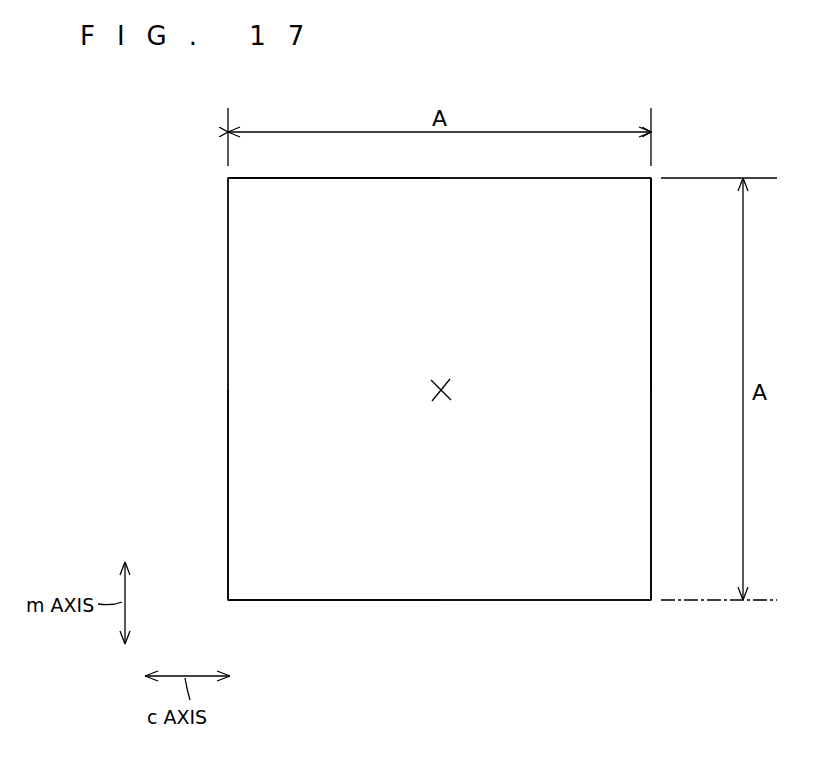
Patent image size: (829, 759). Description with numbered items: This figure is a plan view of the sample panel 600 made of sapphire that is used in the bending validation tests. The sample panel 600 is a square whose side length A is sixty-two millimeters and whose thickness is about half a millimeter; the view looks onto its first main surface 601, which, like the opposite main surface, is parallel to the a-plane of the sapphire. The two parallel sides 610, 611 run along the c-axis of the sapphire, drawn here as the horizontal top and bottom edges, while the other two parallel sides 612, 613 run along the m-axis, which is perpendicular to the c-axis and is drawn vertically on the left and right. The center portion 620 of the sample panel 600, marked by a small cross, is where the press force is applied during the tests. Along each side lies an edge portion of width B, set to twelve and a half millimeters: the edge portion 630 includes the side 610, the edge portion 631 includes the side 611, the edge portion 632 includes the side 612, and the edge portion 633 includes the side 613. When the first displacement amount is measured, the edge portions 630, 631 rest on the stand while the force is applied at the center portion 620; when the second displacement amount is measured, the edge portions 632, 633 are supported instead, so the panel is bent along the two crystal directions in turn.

The sample panel 600 is at (224, 224).
The first main surface 601 is at (617, 400).
The side 610 is at (512, 178).
The side 611 is at (543, 602).
The side 612 is at (228, 396).
The side 613 is at (652, 296).
The center portion 620 is at (441, 401).
The edge portion 630 is at (350, 190).
The edge portion 631 is at (438, 590).
The edge portion 632 is at (248, 452).
The edge portion 633 is at (632, 349).